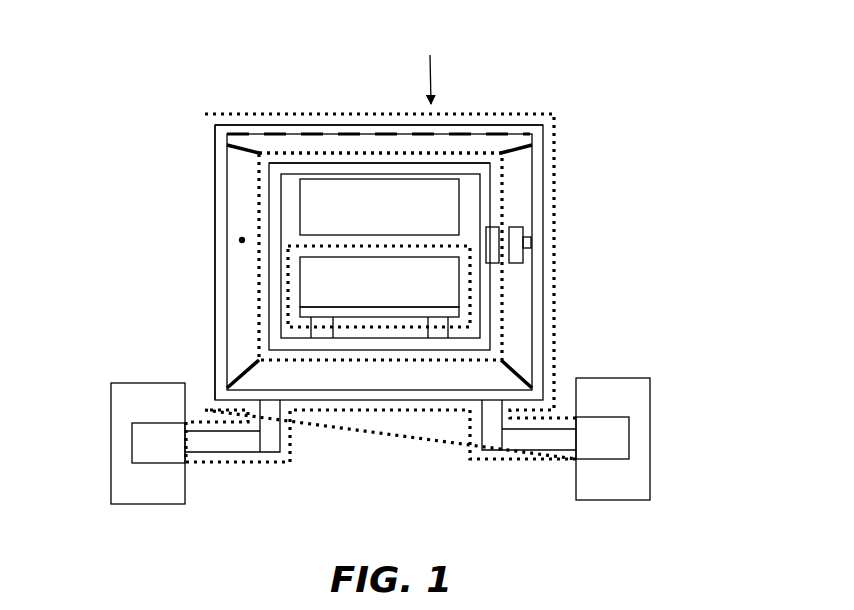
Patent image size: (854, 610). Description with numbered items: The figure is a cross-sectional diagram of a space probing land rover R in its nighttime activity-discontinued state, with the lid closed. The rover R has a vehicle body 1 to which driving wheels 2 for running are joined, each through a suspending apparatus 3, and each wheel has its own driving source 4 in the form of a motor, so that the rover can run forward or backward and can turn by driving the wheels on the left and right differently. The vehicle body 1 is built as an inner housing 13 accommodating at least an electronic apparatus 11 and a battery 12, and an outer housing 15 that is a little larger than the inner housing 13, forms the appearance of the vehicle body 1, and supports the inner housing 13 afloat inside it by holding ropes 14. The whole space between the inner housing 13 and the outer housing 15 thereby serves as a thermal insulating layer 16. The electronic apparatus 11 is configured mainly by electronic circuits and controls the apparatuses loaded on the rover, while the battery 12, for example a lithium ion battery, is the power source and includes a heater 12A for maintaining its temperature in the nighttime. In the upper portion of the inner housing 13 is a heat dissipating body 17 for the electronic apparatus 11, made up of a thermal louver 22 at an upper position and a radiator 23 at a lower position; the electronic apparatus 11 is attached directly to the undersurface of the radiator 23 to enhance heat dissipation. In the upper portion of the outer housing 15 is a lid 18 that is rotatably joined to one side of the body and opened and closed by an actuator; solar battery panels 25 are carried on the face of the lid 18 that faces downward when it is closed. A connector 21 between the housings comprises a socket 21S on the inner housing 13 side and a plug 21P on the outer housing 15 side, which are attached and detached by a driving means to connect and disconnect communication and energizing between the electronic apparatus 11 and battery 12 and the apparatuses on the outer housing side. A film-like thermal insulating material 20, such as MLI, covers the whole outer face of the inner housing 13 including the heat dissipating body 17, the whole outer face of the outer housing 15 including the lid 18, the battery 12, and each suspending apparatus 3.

The space probing land rover R is at (447, 45).
The vehicle body 1 is at (546, 169).
The driving wheel 2 is at (117, 393).
The suspending apparatus 3 is at (233, 443).
The driving source 4 is at (140, 442).
The electronic apparatus 11 is at (395, 218).
The battery 12 is at (397, 296).
The heater 12A is at (383, 312).
The inner housing 13 is at (270, 188).
The holding rope 14 is at (258, 150).
The outer housing 15 is at (222, 208).
The thermal insulating layer 16 is at (242, 240).
The heat dissipating body 17 is at (335, 160).
The lid 18 is at (385, 124).
The thermal insulating material 20 is at (205, 135).
The connector 21 is at (683, 188).
The socket 21S is at (492, 237).
The plug 21P is at (515, 238).
The thermal louver 22 is at (470, 158).
The radiator 23 is at (483, 170).
The solar battery panel 25 is at (280, 138).